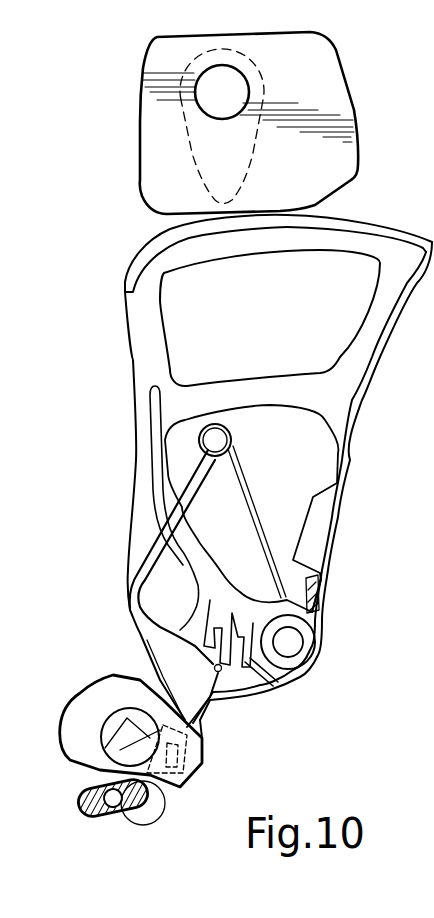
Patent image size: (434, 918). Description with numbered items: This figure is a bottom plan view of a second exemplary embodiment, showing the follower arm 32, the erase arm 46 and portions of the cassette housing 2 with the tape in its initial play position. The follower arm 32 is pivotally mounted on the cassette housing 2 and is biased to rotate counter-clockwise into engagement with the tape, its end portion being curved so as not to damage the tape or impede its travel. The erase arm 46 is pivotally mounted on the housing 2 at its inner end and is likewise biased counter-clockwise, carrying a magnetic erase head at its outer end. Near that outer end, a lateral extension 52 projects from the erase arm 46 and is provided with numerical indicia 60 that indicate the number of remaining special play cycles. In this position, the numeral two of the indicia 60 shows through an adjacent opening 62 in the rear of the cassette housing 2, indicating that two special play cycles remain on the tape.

The cassette housing 2 is at (82, 750).
The follower arm 32 is at (273, 240).
The erase arm 46 is at (158, 545).
The extension 52 is at (150, 747).
The numerical indicia 60 is at (140, 722).
The opening 62 is at (107, 727).